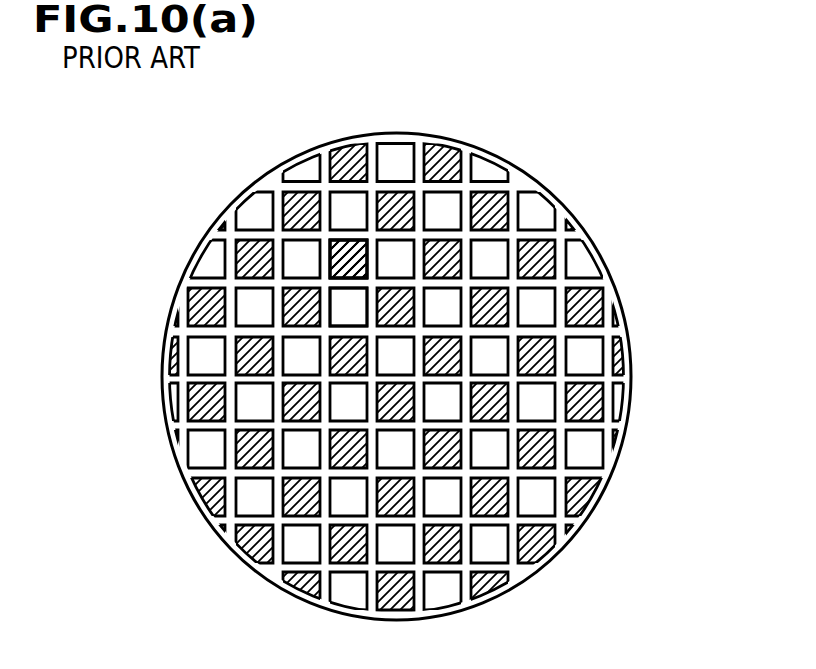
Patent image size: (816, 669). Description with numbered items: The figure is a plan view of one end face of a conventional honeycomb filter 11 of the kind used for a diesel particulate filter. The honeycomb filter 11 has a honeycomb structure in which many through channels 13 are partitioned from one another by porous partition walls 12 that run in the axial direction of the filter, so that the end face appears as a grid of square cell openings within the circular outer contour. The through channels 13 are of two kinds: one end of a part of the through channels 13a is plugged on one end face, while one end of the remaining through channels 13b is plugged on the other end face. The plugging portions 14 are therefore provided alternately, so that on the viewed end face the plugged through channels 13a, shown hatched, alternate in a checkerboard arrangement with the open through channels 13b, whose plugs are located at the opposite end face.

The honeycomb filter 11 is at (575, 190).
The partition walls 12 is at (443, 237).
The through channels 13 is at (82, 225).
The through channels plugged on one end face 13a is at (347, 265).
The remaining through channels 13b is at (347, 308).
The plugging portions 14 is at (343, 247).